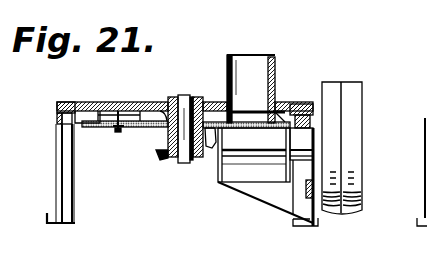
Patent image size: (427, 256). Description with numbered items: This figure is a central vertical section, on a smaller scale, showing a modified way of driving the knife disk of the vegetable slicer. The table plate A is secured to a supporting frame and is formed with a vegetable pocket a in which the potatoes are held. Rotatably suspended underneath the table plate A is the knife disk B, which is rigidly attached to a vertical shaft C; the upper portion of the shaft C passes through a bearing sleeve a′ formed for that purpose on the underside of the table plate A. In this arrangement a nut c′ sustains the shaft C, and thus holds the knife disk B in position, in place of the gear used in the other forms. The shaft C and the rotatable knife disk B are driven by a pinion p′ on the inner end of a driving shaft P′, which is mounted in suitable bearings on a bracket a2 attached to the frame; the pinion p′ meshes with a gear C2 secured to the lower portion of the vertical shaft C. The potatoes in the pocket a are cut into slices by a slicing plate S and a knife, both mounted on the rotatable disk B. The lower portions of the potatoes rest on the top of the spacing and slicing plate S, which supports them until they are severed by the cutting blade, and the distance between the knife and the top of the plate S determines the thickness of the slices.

The table plate A is at (58, 104).
The knife disk B is at (100, 124).
The slicing plate S is at (113, 102).
The bearing sleeve a′ is at (165, 111).
The nut c′ is at (171, 97).
The vertical shaft C is at (189, 95).
The gear C2 is at (161, 154).
The pinion p′ is at (211, 122).
The vegetable pocket a is at (256, 89).
The bracket a2 is at (268, 177).
The driving shaft P′ is at (318, 147).